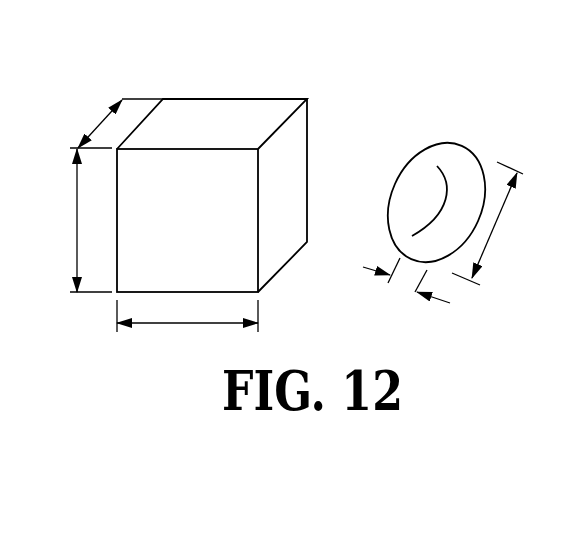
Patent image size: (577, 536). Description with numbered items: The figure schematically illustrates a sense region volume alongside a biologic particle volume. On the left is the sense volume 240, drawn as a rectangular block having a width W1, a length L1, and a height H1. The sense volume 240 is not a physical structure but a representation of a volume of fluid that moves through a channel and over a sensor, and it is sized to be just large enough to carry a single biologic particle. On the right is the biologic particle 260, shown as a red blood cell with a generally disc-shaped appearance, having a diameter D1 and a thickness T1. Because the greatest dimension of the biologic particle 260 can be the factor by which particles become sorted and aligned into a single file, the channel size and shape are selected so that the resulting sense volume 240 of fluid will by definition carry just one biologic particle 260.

The sense volume 240 is at (200, 97).
The biologic particle 260 is at (452, 143).
The width W1 is at (114, 123).
The height H1 is at (77, 220).
The length L1 is at (187, 329).
The diameter D1 is at (491, 223).
The thickness T1 is at (406, 291).